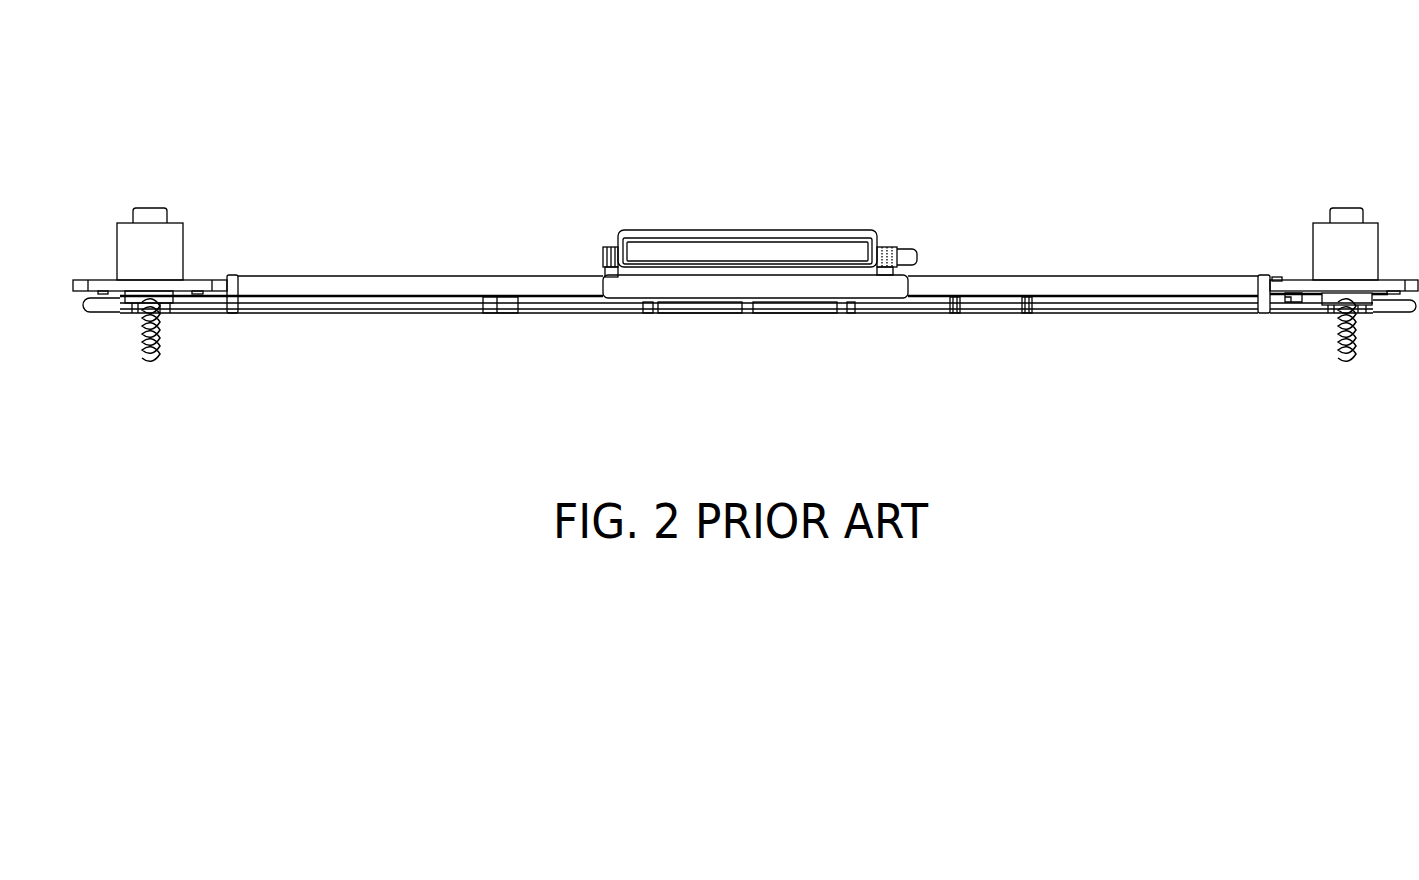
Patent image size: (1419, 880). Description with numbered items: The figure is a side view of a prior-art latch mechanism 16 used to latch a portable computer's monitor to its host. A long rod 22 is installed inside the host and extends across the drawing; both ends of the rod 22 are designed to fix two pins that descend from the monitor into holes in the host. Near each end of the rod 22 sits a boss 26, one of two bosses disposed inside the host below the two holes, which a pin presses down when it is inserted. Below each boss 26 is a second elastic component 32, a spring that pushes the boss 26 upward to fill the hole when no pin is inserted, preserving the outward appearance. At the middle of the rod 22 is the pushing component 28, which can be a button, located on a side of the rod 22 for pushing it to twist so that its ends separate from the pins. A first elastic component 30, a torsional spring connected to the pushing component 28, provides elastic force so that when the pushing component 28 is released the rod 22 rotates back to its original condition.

The latch mechanism 16 is at (724, 122).
The rod 22 is at (1003, 305).
The boss 26 is at (150, 213).
The pushing component 28 is at (745, 229).
The first elastic component 30 is at (612, 246).
The second elastic component 32 is at (155, 357).